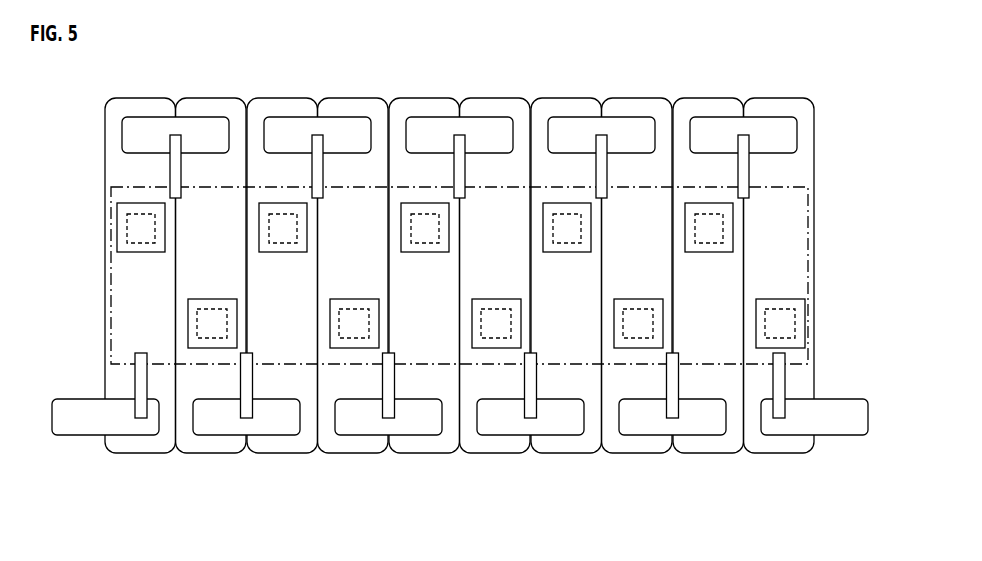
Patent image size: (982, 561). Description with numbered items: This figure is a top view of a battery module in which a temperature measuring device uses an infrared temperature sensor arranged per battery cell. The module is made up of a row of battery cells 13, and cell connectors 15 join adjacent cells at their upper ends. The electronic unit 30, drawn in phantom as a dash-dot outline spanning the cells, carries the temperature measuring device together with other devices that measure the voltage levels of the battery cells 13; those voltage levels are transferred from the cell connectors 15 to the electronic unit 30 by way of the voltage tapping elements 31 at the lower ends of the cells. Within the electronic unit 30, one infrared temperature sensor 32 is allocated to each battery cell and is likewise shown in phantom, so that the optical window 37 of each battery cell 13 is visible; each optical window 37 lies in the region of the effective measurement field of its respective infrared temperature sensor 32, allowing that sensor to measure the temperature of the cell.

The battery cells 13 is at (648, 445).
The cell connectors 15 is at (783, 136).
The electronic unit 30 is at (111, 295).
The voltage tapping elements 31 is at (246, 381).
The infrared temperature sensors 32 is at (723, 223).
The optical window 37 is at (725, 233).